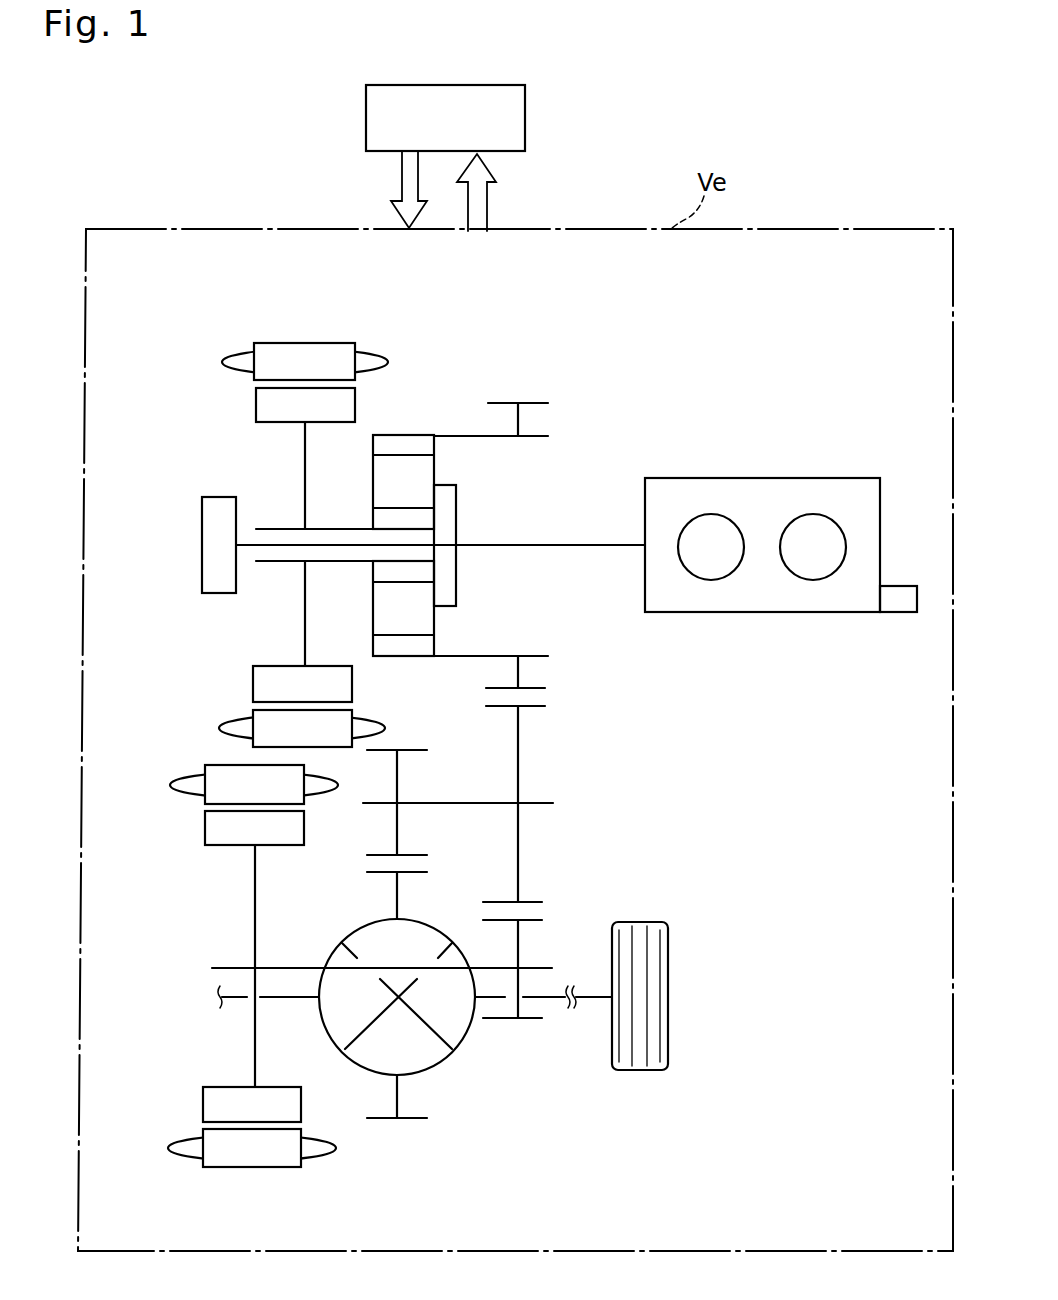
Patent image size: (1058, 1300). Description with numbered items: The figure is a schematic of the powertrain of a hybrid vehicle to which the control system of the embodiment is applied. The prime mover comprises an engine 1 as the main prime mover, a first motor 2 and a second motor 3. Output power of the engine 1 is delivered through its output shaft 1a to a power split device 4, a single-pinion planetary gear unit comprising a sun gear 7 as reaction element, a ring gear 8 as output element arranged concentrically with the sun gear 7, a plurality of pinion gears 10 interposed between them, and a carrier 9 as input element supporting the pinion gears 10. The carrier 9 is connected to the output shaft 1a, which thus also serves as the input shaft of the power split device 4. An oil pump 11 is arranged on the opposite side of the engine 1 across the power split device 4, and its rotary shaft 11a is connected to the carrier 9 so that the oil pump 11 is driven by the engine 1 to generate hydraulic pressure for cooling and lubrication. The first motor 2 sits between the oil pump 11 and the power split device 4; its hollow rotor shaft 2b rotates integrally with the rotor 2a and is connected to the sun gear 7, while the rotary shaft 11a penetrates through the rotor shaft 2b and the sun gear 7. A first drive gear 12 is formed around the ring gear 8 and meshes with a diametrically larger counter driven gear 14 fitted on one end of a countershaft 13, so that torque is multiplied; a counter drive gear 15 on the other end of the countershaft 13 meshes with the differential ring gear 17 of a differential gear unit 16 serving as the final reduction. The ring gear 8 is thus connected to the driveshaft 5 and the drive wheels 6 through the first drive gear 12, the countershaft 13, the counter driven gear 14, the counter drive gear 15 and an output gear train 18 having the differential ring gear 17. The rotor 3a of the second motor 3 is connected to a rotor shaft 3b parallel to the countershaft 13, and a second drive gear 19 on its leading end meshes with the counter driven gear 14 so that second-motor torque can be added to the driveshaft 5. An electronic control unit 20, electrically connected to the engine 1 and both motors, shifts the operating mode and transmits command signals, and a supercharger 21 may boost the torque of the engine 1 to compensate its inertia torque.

The engine 1 is at (768, 613).
The output shaft 1a is at (597, 545).
The first motor 2 is at (256, 518).
The rotor 2a is at (254, 408).
The rotor shaft 2b is at (272, 565).
The second motor 3 is at (219, 983).
The rotor 3a is at (205, 833).
The rotor shaft 3b is at (296, 965).
The power split device 4 is at (435, 459).
The driveshaft 5 is at (557, 1000).
The drive wheels 6 is at (638, 1070).
The sun gear 7 is at (373, 572).
The ring gear 8 is at (410, 432).
The carrier 9 is at (457, 510).
The pinion gears 10 is at (430, 467).
The oil pump 11 is at (212, 598).
The rotary shaft 11a is at (244, 545).
The first drive gear 12 is at (535, 400).
The countershaft 13 is at (470, 802).
The counter driven gear 14 is at (538, 704).
The counter drive gear 15 is at (407, 748).
The differential gear unit 16 is at (432, 1068).
The differential ring gear 17 is at (405, 1120).
The output gear train 18 is at (499, 867).
The second drive gear 19 is at (523, 1020).
The electronic control unit 20 is at (525, 120).
The supercharger 21 is at (903, 613).